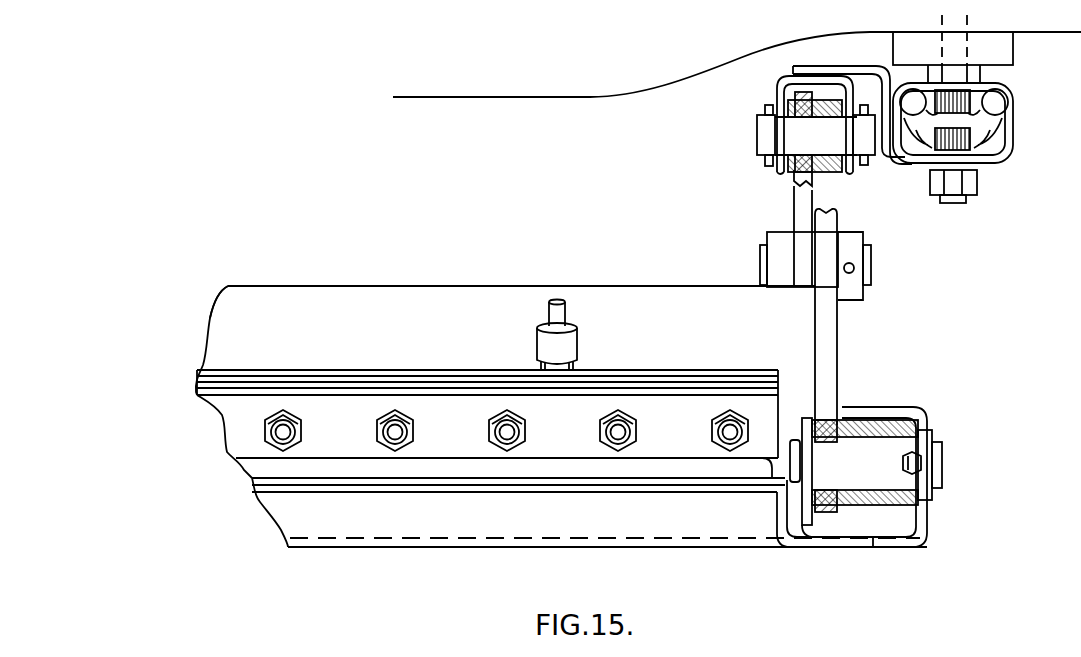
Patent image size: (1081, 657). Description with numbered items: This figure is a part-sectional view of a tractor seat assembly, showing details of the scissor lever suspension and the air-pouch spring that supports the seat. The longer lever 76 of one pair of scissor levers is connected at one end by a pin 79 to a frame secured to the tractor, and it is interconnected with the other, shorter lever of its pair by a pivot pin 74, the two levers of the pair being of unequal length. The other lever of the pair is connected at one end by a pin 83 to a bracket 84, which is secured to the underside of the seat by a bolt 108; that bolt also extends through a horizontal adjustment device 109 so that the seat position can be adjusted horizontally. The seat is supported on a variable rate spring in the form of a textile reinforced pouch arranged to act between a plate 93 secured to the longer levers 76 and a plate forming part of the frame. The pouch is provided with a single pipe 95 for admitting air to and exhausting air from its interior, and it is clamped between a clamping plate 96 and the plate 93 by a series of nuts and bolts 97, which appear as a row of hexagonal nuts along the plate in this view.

The plate 93 is at (387, 292).
The pipe 95 is at (558, 302).
The nuts and bolts 97 is at (263, 433).
The clamping plate 96 is at (318, 445).
The pivot pin 74 is at (871, 268).
The longer lever 76 is at (824, 366).
The pin 83 is at (762, 133).
The bracket 84 is at (856, 160).
The horizontal adjustment device 109 is at (975, 130).
The bolt 108 is at (974, 180).
The pin 79 is at (880, 478).